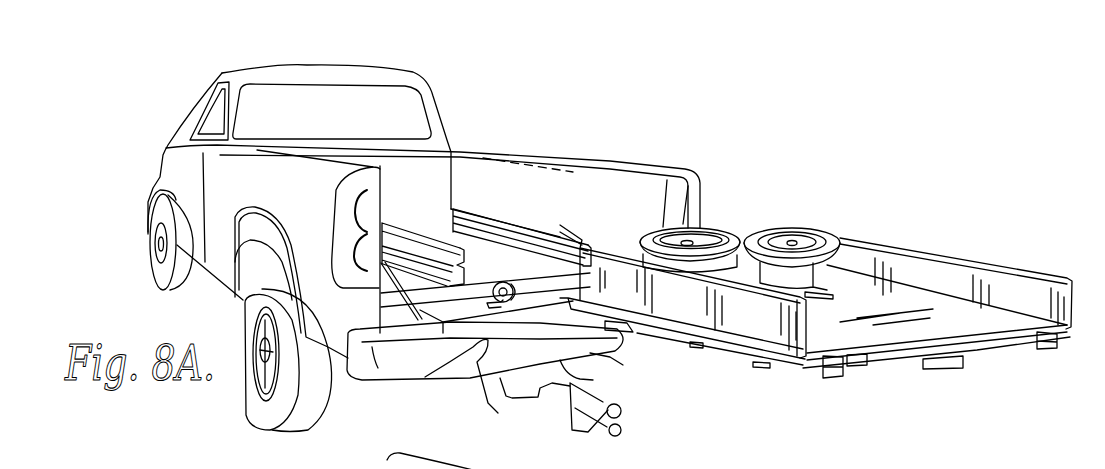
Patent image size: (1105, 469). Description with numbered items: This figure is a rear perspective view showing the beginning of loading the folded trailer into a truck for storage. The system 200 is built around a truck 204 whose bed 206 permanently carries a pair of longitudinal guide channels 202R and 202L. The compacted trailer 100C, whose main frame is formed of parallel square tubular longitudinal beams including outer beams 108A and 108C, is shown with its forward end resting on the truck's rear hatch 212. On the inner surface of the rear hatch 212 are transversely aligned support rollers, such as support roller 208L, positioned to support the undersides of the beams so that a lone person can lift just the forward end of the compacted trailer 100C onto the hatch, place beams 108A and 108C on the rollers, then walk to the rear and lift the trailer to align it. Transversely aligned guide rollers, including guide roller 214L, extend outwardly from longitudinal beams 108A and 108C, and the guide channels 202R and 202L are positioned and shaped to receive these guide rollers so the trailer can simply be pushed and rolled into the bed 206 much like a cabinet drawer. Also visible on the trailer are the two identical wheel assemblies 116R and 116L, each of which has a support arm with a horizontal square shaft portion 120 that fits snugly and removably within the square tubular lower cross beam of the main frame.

The system 200 is at (801, 277).
The truck 204 is at (333, 66).
The longitudinal guide channel 202L is at (413, 233).
The longitudinal guide channel 202R is at (562, 237).
The bed 206 is at (500, 261).
The support roller 208L is at (503, 303).
The rear hatch 212 is at (457, 338).
The guide roller 214L is at (633, 333).
The compacted trailer 100C is at (987, 354).
The wheel assembly 116L is at (713, 230).
The wheel assembly 116R is at (813, 230).
The horizontal square shaft portion 120 is at (847, 257).
The longitudinal beam 108A is at (830, 382).
The longitudinal beam 108C is at (1043, 348).